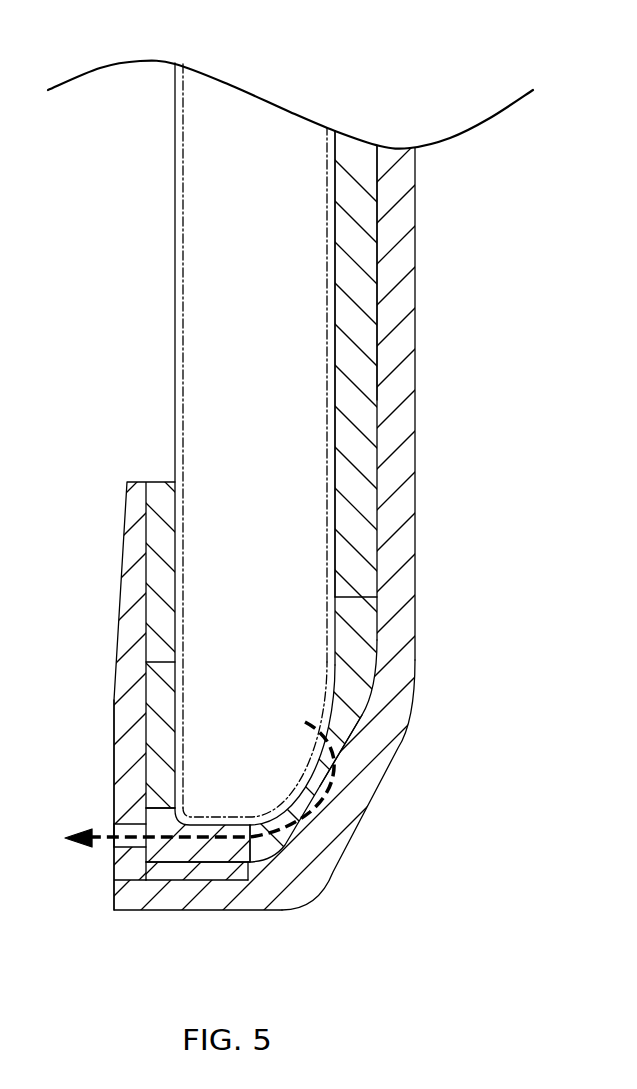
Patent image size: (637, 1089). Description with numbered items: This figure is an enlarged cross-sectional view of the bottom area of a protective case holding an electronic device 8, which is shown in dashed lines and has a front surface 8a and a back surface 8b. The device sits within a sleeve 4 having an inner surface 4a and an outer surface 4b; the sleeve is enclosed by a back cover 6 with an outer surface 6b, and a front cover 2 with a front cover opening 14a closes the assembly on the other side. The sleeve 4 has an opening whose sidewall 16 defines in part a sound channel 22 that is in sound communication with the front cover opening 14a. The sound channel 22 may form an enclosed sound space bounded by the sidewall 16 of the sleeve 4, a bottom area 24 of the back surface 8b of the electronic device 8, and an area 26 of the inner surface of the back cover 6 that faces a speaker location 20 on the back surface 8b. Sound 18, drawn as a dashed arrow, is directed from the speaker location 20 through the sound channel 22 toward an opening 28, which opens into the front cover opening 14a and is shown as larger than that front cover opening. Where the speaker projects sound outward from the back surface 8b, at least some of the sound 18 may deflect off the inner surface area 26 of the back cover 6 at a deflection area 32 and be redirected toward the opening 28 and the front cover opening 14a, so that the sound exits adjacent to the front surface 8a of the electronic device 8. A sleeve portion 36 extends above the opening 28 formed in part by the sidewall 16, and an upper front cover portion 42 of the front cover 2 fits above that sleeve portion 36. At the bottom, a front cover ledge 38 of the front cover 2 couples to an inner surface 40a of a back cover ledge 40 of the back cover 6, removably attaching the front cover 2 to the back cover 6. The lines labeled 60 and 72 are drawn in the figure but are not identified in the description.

The front cover 2 is at (123, 514).
The sleeve 4 is at (355, 473).
The inner surface of the sleeve 4a is at (335, 510).
The outer surface of the sleeve 4b is at (377, 511).
The back cover 6 is at (405, 257).
The outer surface of the back cover 6b is at (415, 297).
The electronic device 8 is at (235, 228).
The front surface of the electronic device 8a is at (183, 277).
The back surface of the electronic device 8b is at (322, 640).
The front cover opening 14a is at (123, 832).
The sidewall 16 is at (347, 687).
The sound 18 is at (340, 753).
The speaker location 20 is at (298, 721).
The sound channel 22 is at (287, 853).
The bottom area of the outer surface of the electronic device 24 is at (230, 810).
The area of the inner surface of the back cover 26 is at (263, 843).
The opening to the sound channel 28 is at (140, 848).
The deflection area 32 is at (345, 786).
The sleeve portion 36 is at (162, 740).
The front cover ledge 38 is at (130, 870).
The back cover ledge 40 is at (160, 900).
The inner surface of the back cover ledge 40a is at (215, 878).
The upper front cover portion 42 is at (160, 577).
The interface 60 is at (380, 350).
The inner surface 72 is at (333, 348).